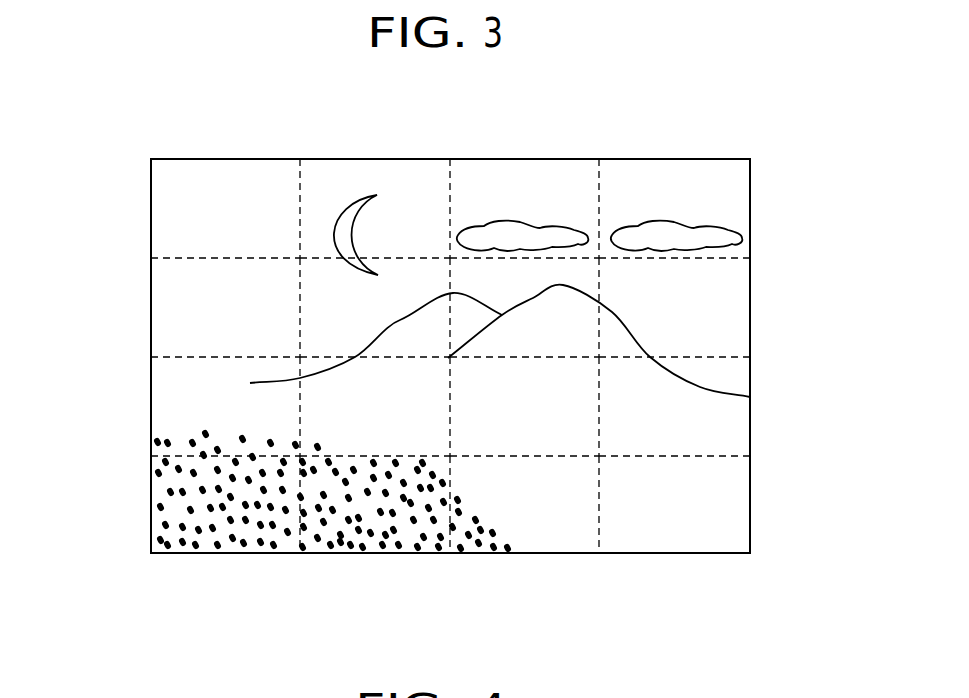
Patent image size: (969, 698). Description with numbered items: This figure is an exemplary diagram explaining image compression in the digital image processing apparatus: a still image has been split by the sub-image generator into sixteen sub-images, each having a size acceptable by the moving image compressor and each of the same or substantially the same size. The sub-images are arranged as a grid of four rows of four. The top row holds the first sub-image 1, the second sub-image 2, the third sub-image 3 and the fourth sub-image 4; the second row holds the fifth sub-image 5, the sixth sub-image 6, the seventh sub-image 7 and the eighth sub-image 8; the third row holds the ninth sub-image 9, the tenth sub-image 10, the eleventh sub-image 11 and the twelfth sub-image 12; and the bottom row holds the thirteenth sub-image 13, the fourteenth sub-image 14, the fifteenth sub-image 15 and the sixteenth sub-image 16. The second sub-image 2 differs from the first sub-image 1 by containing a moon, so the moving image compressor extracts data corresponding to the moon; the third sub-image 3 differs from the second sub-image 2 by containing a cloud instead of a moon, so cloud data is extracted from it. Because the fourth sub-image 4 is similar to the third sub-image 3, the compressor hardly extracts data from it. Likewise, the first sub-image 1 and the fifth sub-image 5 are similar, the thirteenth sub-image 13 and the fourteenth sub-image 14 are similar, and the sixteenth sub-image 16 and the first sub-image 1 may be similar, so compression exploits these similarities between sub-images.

The sub-image SubIm1 1 is at (221, 168).
The sub-image SubIm2 2 is at (383, 168).
The sub-image SubIm3 3 is at (530, 168).
The sub-image SubIm4 4 is at (677, 168).
The sub-image SubIm5 5 is at (170, 282).
The sub-image SubIm6 6 is at (317, 317).
The sub-image SubIm7 7 is at (583, 315).
The sub-image SubIm8 8 is at (730, 282).
The sub-image SubIm9 9 is at (170, 381).
The sub-image SubIm10 10 is at (316, 416).
The sub-image SubIm11 11 is at (583, 413).
The sub-image SubIm12 12 is at (730, 379).
The sub-image SubIm13 13 is at (222, 557).
The sub-image SubIm14 14 is at (385, 557).
The sub-image SubIm15 15 is at (530, 557).
The sub-image SubIm16 16 is at (678, 557).